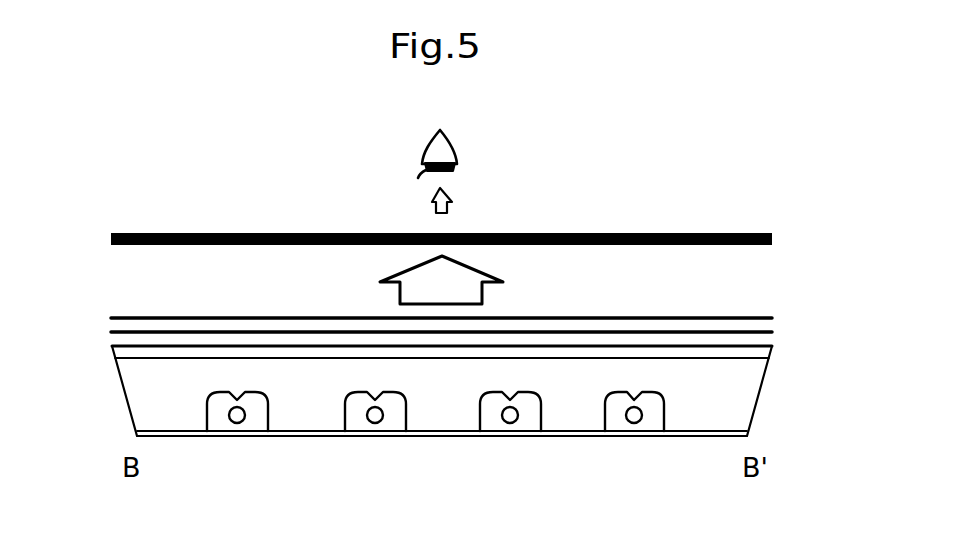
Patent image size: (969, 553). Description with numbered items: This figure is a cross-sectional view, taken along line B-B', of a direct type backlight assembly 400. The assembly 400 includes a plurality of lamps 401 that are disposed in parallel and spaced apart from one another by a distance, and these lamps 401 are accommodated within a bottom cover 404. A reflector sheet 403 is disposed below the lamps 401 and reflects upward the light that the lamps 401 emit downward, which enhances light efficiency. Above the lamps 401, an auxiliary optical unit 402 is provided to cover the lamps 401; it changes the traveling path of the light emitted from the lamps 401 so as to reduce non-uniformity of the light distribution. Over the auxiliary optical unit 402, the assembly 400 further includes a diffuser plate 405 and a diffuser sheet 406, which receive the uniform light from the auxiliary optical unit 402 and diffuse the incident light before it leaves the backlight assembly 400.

The direct type backlight assembly 400 is at (85, 318).
The lamp 401 is at (375, 418).
The auxiliary optical unit 402 is at (541, 395).
The reflector sheet 403 is at (677, 434).
The bottom cover 404 is at (753, 388).
The diffuser plate 405 is at (772, 348).
The diffuser sheet 406 is at (765, 330).